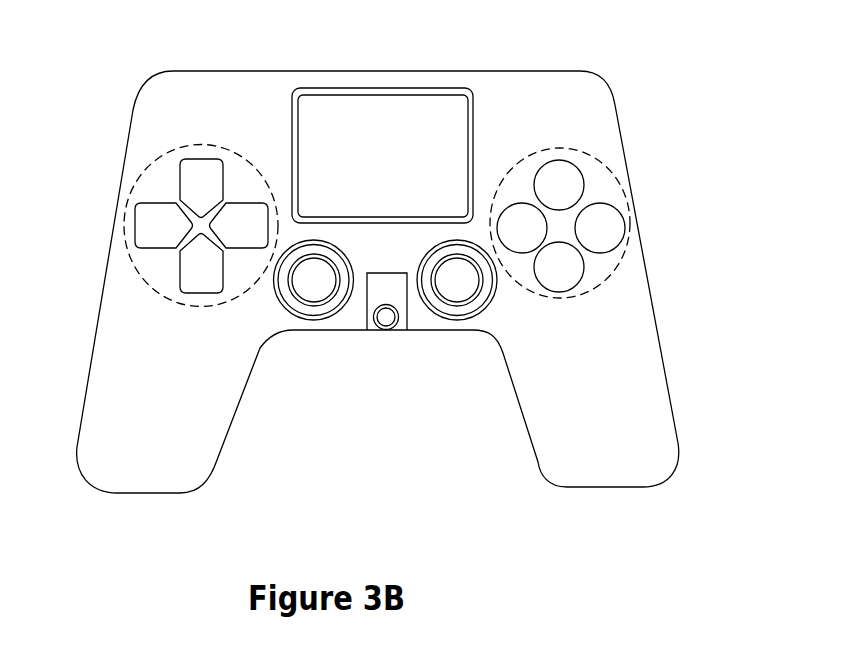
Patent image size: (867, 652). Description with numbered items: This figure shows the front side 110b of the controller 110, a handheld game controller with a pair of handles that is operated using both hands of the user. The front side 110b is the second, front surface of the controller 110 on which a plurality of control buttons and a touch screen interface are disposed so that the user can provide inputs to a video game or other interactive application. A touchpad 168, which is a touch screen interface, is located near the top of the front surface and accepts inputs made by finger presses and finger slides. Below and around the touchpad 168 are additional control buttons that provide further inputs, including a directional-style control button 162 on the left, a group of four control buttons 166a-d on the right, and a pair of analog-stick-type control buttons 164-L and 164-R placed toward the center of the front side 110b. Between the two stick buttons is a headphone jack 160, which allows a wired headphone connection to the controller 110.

The controller 110 is at (396, 246).
The front side 110b is at (643, 317).
The headphone jack 160 is at (382, 320).
The control button 162 is at (158, 187).
The control button 164-L is at (293, 299).
The control button 164-R is at (478, 302).
The control buttons 166a-d is at (605, 185).
The touchpad 168 is at (378, 132).